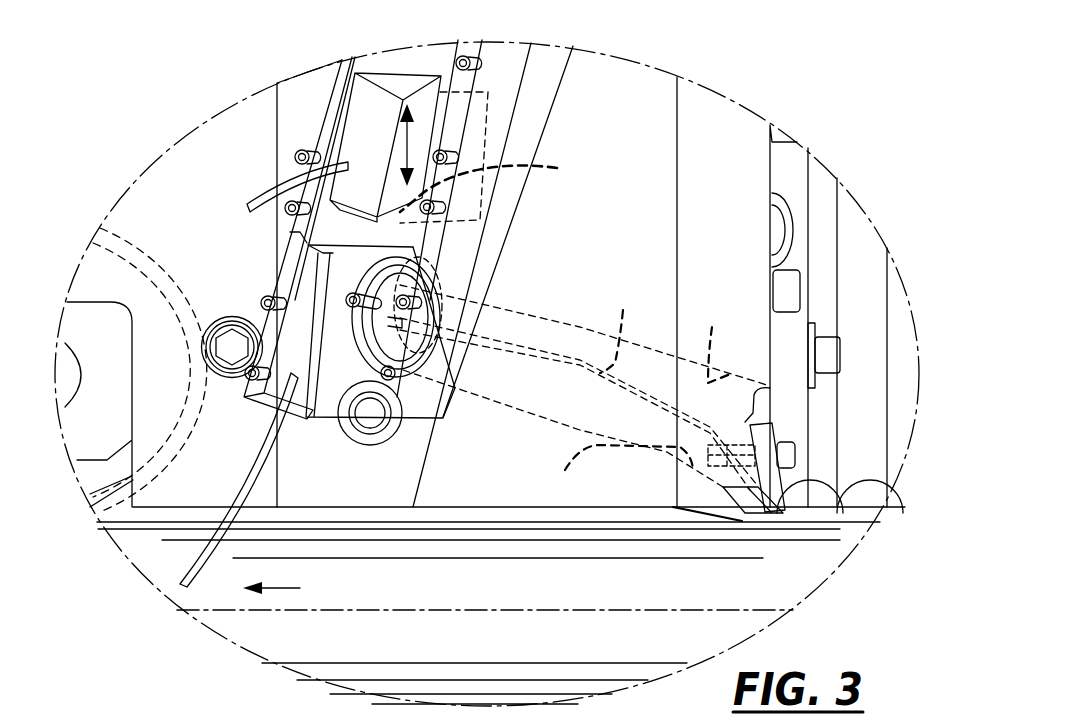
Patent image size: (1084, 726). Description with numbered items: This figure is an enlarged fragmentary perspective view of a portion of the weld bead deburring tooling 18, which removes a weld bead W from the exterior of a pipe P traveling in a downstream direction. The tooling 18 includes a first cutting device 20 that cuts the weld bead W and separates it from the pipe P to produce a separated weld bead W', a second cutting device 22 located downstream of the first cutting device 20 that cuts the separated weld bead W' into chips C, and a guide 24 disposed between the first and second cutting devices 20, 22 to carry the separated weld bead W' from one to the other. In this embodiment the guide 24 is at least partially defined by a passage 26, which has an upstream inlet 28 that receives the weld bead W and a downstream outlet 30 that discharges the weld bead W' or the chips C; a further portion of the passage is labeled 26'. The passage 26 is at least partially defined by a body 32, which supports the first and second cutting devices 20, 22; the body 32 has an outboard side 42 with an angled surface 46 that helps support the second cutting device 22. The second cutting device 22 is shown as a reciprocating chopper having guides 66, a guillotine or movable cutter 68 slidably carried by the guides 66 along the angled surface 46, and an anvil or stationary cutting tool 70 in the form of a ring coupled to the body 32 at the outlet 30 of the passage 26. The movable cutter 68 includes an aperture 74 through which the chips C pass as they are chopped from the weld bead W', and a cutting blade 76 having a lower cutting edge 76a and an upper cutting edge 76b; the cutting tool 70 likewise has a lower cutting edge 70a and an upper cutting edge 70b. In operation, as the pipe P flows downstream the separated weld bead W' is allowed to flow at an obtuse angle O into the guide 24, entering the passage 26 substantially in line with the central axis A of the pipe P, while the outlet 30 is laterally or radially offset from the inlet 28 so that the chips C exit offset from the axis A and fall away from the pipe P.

The deburring tooling 18 is at (748, 57).
The first cutting device 20 is at (890, 438).
The second cutting device 22 is at (258, 232).
The guide 24 is at (540, 498).
The passage 26 is at (629, 465).
The coolant stream path 26' is at (717, 338).
The upstream inlet 28 is at (770, 388).
The downstream outlet 30 is at (400, 290).
The body 32 is at (648, 224).
The outboard side 42 is at (342, 585).
The angled surface 46 is at (558, 62).
The guides 66 is at (343, 52).
The movable cutter 68 is at (412, 55).
The stationary cutting tool 70 is at (356, 364).
The lower cutting edge 70a is at (363, 368).
The upper cutting edge 70b is at (406, 268).
The aperture 74 is at (386, 137).
The cutting blade 76 is at (362, 260).
The lower cutting edge 76a is at (363, 257).
The upper cutting edge 76b is at (500, 185).
The central axis A is at (497, 612).
The chips C is at (288, 184).
The obtuse angle O is at (822, 486).
The pipe P is at (838, 550).
The weld bead W is at (856, 500).
The separated weld bead W' is at (618, 328).